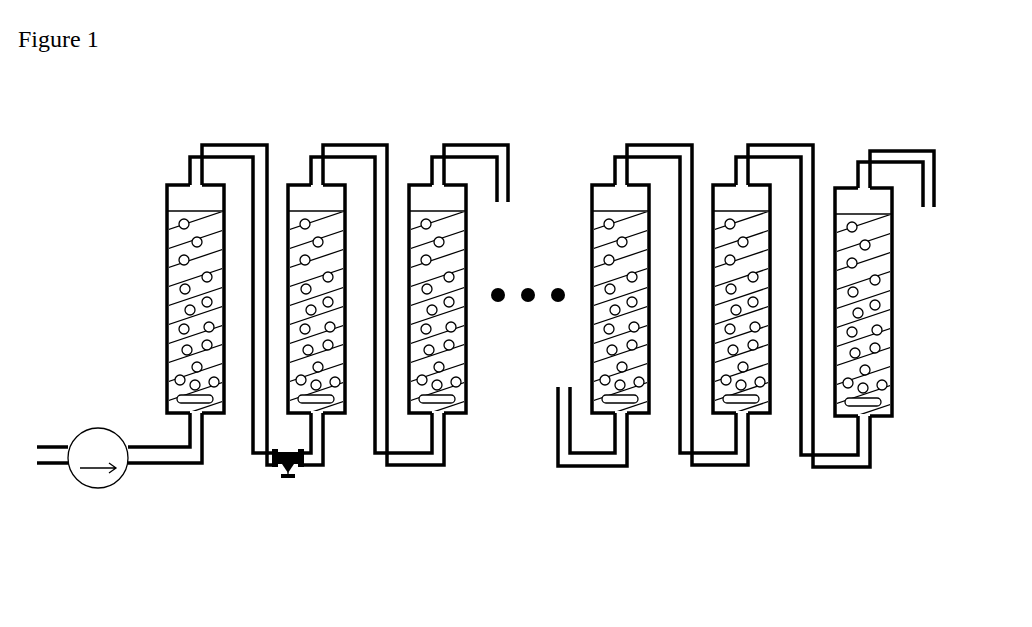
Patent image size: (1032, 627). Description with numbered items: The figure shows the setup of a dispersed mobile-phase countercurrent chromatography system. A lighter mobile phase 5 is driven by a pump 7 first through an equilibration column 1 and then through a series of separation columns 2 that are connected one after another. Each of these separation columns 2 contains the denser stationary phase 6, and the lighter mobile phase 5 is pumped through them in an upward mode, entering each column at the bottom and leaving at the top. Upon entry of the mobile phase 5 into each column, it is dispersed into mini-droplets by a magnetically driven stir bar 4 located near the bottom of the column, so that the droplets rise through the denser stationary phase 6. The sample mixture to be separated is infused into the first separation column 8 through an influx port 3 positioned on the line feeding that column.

The equilibration column 1 is at (167, 232).
The series of separation columns 2 is at (878, 138).
The influx port 3 is at (300, 478).
The magnetically driven stir bar 4 is at (178, 399).
The lighter mobile phase 5 is at (173, 218).
The denser stationary phase 6 is at (180, 303).
The pump 7 is at (122, 476).
The first separation column 8 is at (340, 415).